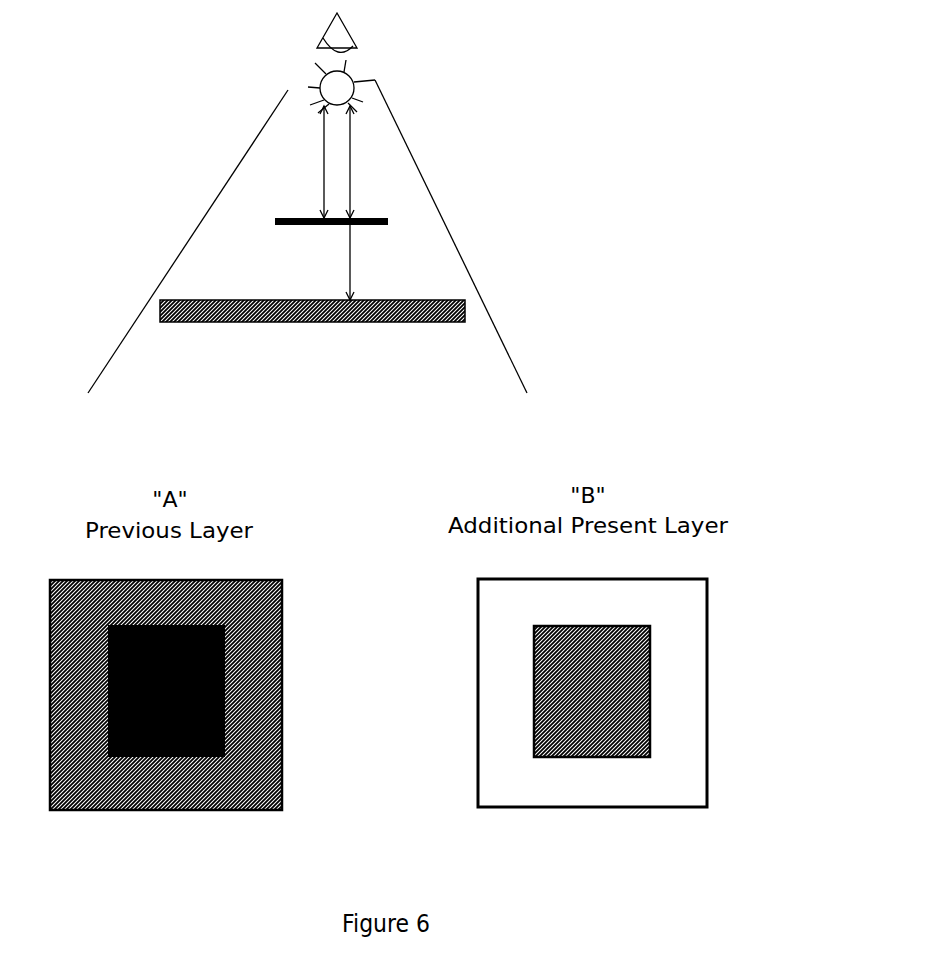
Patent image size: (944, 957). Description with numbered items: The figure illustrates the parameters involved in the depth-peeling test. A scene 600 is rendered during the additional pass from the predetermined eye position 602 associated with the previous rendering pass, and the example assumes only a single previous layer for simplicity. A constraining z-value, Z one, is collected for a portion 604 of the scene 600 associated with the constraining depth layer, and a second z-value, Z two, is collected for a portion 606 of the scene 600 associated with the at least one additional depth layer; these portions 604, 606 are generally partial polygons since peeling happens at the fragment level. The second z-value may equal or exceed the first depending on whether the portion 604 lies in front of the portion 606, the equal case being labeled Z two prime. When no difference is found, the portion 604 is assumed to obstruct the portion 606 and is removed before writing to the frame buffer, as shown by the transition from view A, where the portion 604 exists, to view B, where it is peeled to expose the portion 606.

The scene 600 is at (749, 178).
The eye position 602 is at (357, 50).
The portion of the scene associated with the constraining depth layer 604 is at (290, 228).
The portion of the scene associated with the at least one additional depth layer 606 is at (376, 323).